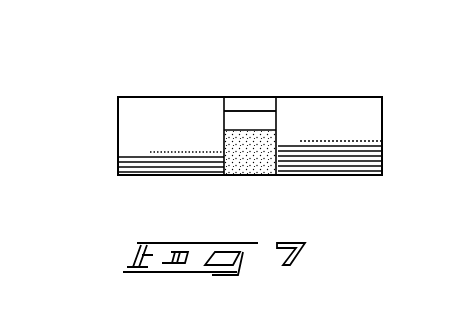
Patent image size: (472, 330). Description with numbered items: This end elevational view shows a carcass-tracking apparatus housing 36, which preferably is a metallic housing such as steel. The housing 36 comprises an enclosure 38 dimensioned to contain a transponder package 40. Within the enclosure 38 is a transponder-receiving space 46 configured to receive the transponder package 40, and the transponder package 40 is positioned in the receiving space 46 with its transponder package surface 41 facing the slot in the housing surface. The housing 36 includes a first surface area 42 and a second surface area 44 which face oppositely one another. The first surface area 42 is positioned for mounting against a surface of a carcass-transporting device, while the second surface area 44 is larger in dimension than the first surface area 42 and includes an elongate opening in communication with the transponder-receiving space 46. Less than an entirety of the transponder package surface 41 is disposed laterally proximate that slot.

The carcass-tracking apparatus housing 36 is at (84, 114).
The enclosure 38 is at (137, 90).
The transponder package 40 is at (258, 117).
The transponder package surface 41 is at (235, 111).
The first surface area 42 is at (330, 176).
The second surface area 44 is at (337, 97).
The transponder-receiving space 46 is at (248, 140).